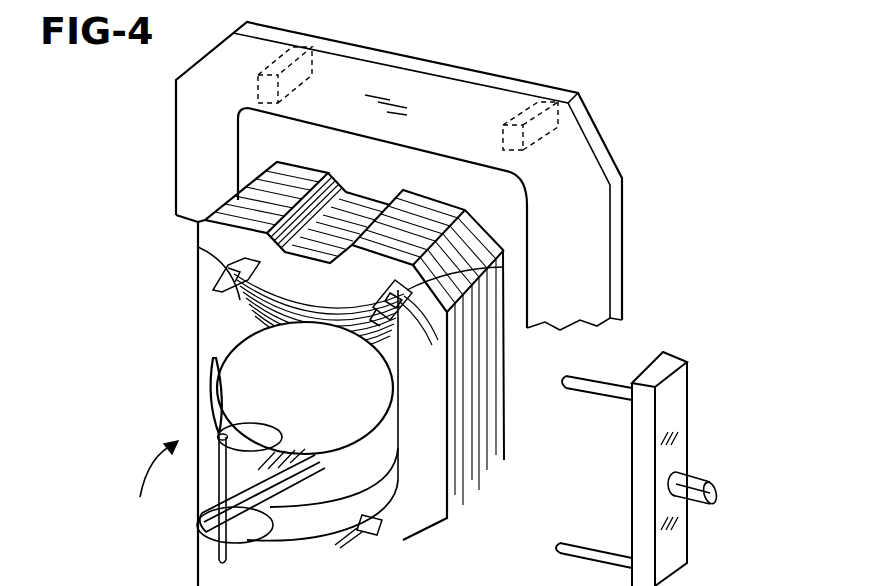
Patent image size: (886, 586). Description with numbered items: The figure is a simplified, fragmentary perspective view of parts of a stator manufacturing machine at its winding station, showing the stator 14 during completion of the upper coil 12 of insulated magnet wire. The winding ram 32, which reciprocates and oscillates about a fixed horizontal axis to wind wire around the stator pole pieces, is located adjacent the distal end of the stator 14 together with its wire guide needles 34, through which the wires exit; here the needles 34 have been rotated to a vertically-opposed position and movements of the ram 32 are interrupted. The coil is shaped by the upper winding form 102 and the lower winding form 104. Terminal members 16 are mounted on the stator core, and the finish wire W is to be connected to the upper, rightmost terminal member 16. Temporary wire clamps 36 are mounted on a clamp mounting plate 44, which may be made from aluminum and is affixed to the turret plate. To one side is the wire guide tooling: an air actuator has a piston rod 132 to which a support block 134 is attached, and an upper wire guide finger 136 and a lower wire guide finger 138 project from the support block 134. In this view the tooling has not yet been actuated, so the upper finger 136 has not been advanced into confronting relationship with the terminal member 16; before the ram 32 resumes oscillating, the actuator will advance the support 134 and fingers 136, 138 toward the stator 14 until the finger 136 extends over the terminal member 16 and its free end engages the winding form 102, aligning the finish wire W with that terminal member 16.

The coil 12 is at (317, 293).
The stator 14 is at (487, 413).
The terminal member 16 is at (196, 253).
The winding ram 32 is at (198, 528).
The wire guide needle 34 is at (217, 483).
The temporary wire clamp 36 is at (305, 33).
The clamp mounting plate 44 is at (593, 163).
The finish wire W is at (222, 365).
The upper winding form 102 is at (350, 391).
The lower winding form 104 is at (350, 524).
The piston rod 132 is at (702, 473).
The support block 134 is at (690, 393).
The upper wire guide finger 136 is at (613, 380).
The lower wire guide finger 138 is at (590, 543).